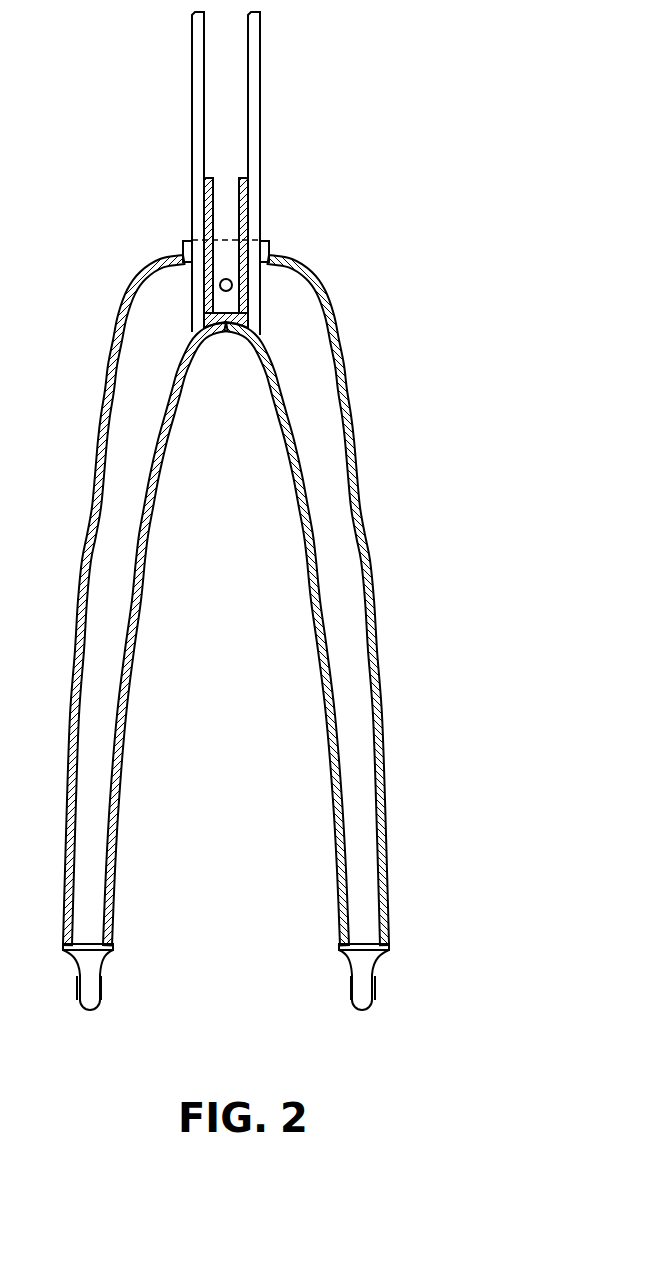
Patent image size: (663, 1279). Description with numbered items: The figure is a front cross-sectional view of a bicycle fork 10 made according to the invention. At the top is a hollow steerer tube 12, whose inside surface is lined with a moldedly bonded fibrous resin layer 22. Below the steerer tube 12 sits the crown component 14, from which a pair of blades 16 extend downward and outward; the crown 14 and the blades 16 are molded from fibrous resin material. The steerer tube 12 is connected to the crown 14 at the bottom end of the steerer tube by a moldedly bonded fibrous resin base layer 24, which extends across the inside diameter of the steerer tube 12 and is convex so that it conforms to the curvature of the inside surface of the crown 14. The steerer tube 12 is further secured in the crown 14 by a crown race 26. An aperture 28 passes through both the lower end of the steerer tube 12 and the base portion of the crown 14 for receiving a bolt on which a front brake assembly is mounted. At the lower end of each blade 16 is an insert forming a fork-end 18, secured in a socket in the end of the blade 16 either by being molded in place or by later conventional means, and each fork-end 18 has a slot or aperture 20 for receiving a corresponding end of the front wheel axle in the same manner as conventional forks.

The bicycle fork 10 is at (261, 534).
The steerer tube 12 is at (260, 137).
The crown component 14 is at (330, 308).
The blades 16 is at (378, 590).
The fork-ends 18 is at (364, 1008).
The slot or aperture 20 is at (375, 988).
The fibrous resin layer 22 is at (250, 202).
The fibrous resin base layer 24 is at (233, 310).
The crown race 26 is at (269, 246).
The aperture 28 is at (233, 285).